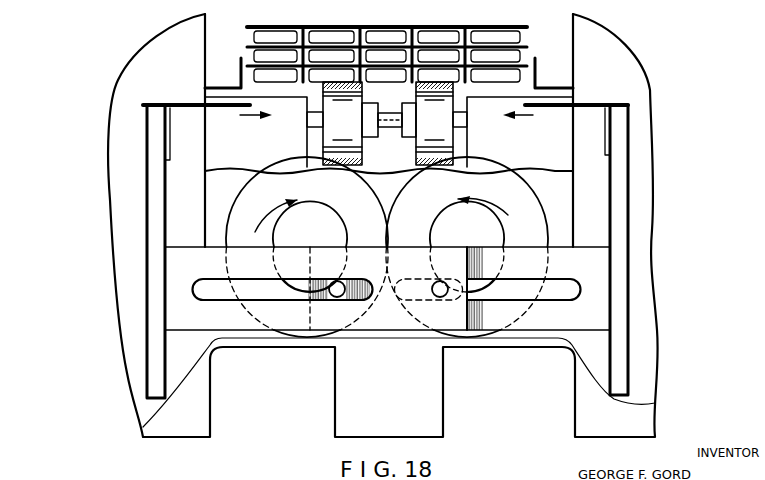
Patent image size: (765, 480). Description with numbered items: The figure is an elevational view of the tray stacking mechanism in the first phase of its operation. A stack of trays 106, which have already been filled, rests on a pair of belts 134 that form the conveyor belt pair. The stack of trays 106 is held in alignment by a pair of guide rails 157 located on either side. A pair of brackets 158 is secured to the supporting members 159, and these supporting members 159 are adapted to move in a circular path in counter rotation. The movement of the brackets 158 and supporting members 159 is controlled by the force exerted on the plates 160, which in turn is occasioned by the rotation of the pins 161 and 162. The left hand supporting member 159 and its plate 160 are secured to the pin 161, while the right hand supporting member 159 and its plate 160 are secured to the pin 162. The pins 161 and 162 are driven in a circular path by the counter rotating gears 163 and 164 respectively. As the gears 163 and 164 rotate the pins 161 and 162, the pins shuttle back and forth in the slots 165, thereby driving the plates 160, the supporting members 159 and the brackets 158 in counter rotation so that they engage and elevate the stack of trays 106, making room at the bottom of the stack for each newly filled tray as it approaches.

The trays 106 is at (493, 26).
The guide rails 157 is at (240, 68).
The brackets 158 is at (188, 103).
The supporting members 159 is at (155, 183).
The conveyor belt pair 134 is at (338, 142).
The gear 163 is at (550, 200).
The gear 164 is at (262, 197).
The plates 160 is at (232, 316).
The pin 161 is at (440, 297).
The pin 162 is at (337, 297).
The slots 165 is at (266, 292).